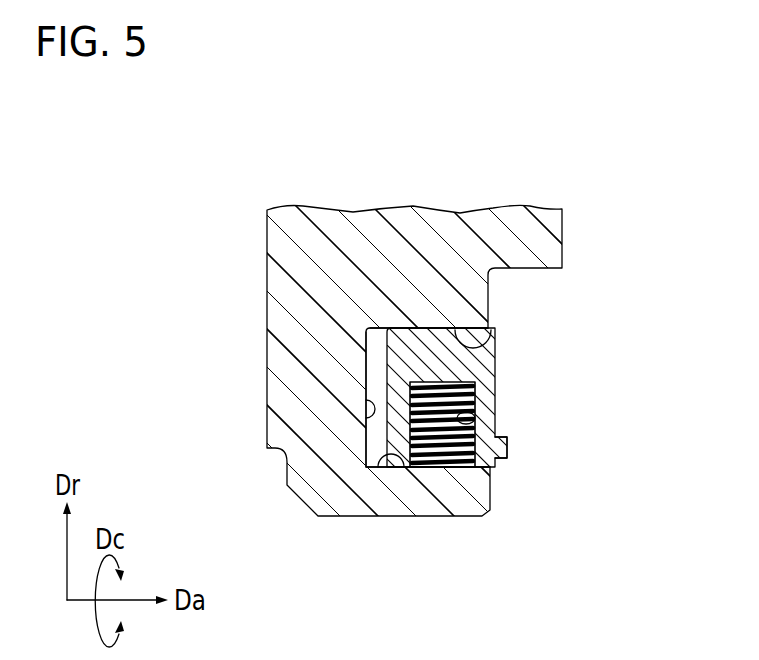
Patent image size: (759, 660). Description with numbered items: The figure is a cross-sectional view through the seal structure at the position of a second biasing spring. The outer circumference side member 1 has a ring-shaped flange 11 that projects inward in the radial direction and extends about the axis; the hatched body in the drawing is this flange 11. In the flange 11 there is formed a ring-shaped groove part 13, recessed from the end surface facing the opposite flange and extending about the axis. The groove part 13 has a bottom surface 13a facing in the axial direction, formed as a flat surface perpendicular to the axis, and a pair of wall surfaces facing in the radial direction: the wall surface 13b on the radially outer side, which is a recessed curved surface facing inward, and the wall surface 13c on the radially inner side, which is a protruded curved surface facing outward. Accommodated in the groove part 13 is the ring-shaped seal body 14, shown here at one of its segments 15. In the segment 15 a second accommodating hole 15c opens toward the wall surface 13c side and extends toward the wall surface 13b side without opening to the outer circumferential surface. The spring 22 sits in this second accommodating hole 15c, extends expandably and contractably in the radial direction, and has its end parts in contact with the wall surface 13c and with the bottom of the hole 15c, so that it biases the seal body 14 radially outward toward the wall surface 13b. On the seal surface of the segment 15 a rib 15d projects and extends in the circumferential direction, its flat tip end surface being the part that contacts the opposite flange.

The flange 11 is at (379, 303).
The outer circumference side member 1 is at (392, 226).
The groove part 13 is at (404, 334).
The bottom surface 13a is at (365, 418).
The wall surface 13b is at (491, 330).
The wall surface 13c is at (385, 462).
The segment 15 is at (474, 378).
The seal body 14 is at (505, 352).
The second accommodating hole 15c is at (478, 418).
The rib 15d is at (507, 442).
The spring (second biasing device) 22 is at (443, 447).